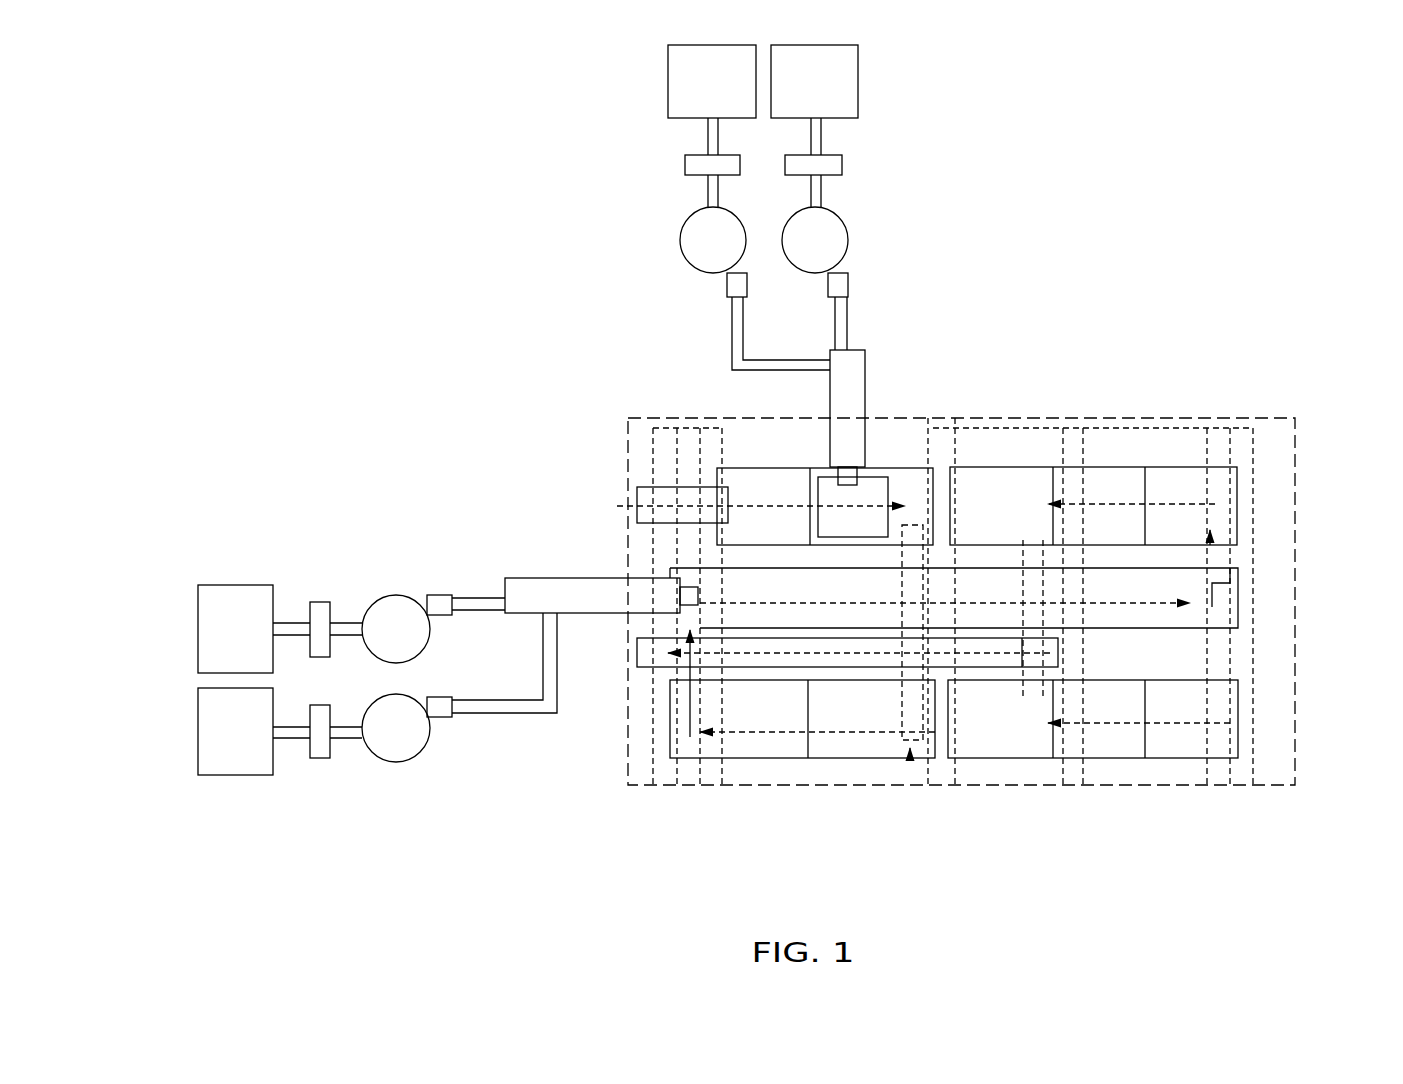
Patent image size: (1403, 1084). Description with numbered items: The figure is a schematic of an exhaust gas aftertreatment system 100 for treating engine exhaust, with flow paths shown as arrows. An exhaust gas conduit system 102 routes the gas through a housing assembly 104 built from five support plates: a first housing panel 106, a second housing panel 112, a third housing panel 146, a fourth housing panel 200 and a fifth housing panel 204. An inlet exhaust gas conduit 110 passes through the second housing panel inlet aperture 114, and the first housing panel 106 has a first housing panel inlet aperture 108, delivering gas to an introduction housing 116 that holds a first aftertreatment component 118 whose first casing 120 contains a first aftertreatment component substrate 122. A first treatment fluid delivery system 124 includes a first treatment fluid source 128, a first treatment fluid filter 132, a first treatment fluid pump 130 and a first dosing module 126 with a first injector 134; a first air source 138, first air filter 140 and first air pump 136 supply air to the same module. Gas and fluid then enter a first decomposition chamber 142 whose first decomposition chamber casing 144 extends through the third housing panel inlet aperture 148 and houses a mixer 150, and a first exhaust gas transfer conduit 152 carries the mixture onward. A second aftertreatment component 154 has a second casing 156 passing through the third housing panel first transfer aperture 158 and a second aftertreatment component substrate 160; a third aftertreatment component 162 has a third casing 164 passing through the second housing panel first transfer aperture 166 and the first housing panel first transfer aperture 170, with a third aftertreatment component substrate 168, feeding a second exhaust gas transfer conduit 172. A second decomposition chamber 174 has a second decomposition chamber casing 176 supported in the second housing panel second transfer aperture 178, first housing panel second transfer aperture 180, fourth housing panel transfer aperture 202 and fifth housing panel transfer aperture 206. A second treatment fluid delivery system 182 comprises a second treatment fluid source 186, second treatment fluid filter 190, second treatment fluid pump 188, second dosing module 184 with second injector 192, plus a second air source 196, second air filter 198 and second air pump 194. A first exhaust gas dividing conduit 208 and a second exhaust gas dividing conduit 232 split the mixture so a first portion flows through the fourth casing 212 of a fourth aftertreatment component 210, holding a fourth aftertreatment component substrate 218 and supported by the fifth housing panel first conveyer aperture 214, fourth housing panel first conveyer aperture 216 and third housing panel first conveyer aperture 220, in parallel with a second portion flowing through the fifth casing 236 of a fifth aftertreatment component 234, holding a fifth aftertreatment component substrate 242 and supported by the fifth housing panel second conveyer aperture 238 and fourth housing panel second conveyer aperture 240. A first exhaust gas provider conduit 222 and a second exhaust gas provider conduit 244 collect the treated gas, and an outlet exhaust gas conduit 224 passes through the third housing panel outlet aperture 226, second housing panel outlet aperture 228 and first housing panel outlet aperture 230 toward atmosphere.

The exhaust gas aftertreatment system 100 is at (1210, 140).
The exhaust gas conduit system 102 is at (628, 425).
The housing assembly 104 is at (1325, 395).
The first housing panel 106 is at (677, 758).
The first housing panel inlet aperture 108 is at (657, 522).
The inlet exhaust gas conduit 110 is at (650, 485).
The second housing panel 112 is at (712, 797).
The second housing panel inlet aperture 114 is at (700, 485).
The introduction housing 116 is at (750, 430).
The first aftertreatment component 118 is at (768, 455).
The first casing 120 is at (782, 468).
The first aftertreatment component substrate 122 is at (745, 490).
The first treatment fluid delivery system 124 is at (870, 262).
The first dosing module 126 is at (850, 350).
The first treatment fluid source 128 is at (858, 82).
The first treatment fluid pump 130 is at (842, 222).
The first treatment fluid filter 132 is at (842, 165).
The first injector 134 is at (862, 467).
The first air pump 136 is at (748, 283).
The first air source 138 is at (668, 80).
The first air filter 140 is at (685, 165).
The first decomposition chamber 142 is at (890, 487).
The first decomposition chamber casing 144 is at (893, 452).
The third housing panel 146 is at (953, 802).
The third housing panel inlet aperture 148 is at (958, 462).
The mixer 150 is at (932, 465).
The first exhaust gas transfer conduit 152 is at (910, 760).
The second aftertreatment component 154 is at (883, 762).
The second casing 156 is at (863, 758).
The third housing panel first transfer aperture 158 is at (933, 740).
The second aftertreatment component substrate 160 is at (836, 740).
The third aftertreatment component 162 is at (797, 772).
The third casing 164 is at (778, 758).
The second housing panel first transfer aperture 166 is at (710, 760).
The third aftertreatment component substrate 168 is at (752, 740).
The first housing panel first transfer aperture 170 is at (655, 790).
The second exhaust gas transfer conduit 172 is at (672, 725).
The second decomposition chamber 174 is at (1182, 568).
The second decomposition chamber casing 176 is at (1222, 518).
The second housing panel second transfer aperture 178 is at (710, 567).
The first housing panel second transfer aperture 180 is at (670, 620).
The second treatment fluid delivery system 182 is at (405, 550).
The second dosing module 184 is at (505, 587).
The second treatment fluid source 186 is at (237, 585).
The second treatment fluid pump 188 is at (428, 648).
The second treatment fluid filter 190 is at (320, 602).
The second injector 192 is at (682, 590).
The second air pump 194 is at (400, 762).
The second air source 196 is at (198, 735).
The second air filter 198 is at (322, 758).
The fourth housing panel 200 is at (1075, 805).
The fourth housing panel transfer aperture 202 is at (1077, 630).
The fifth housing panel 204 is at (1252, 802).
The fifth housing panel transfer aperture 206 is at (1238, 568).
The first exhaust gas dividing conduit 208 is at (1245, 478).
The fourth aftertreatment component 210 is at (1122, 450).
The fourth casing 212 is at (1157, 543).
The fifth housing panel first conveyer aperture 214 is at (1248, 467).
The fourth housing panel first conveyer aperture 216 is at (1075, 467).
The fourth aftertreatment component substrate 218 is at (1058, 467).
The third housing panel first conveyer aperture 220 is at (963, 466).
The first exhaust gas provider conduit 222 is at (1033, 628).
The outlet exhaust gas conduit 224 is at (645, 658).
The third housing panel outlet aperture 226 is at (950, 668).
The second housing panel outlet aperture 228 is at (715, 668).
The first housing panel outlet aperture 230 is at (660, 672).
The second exhaust gas dividing conduit 232 is at (1207, 740).
The fifth aftertreatment component 234 is at (1163, 774).
The fifth casing 236 is at (1210, 758).
The fifth housing panel second conveyer aperture 238 is at (1237, 758).
The fourth housing panel second conveyer aperture 240 is at (1077, 758).
The fifth aftertreatment component substrate 242 is at (1058, 758).
The second exhaust gas provider conduit 244 is at (1037, 674).